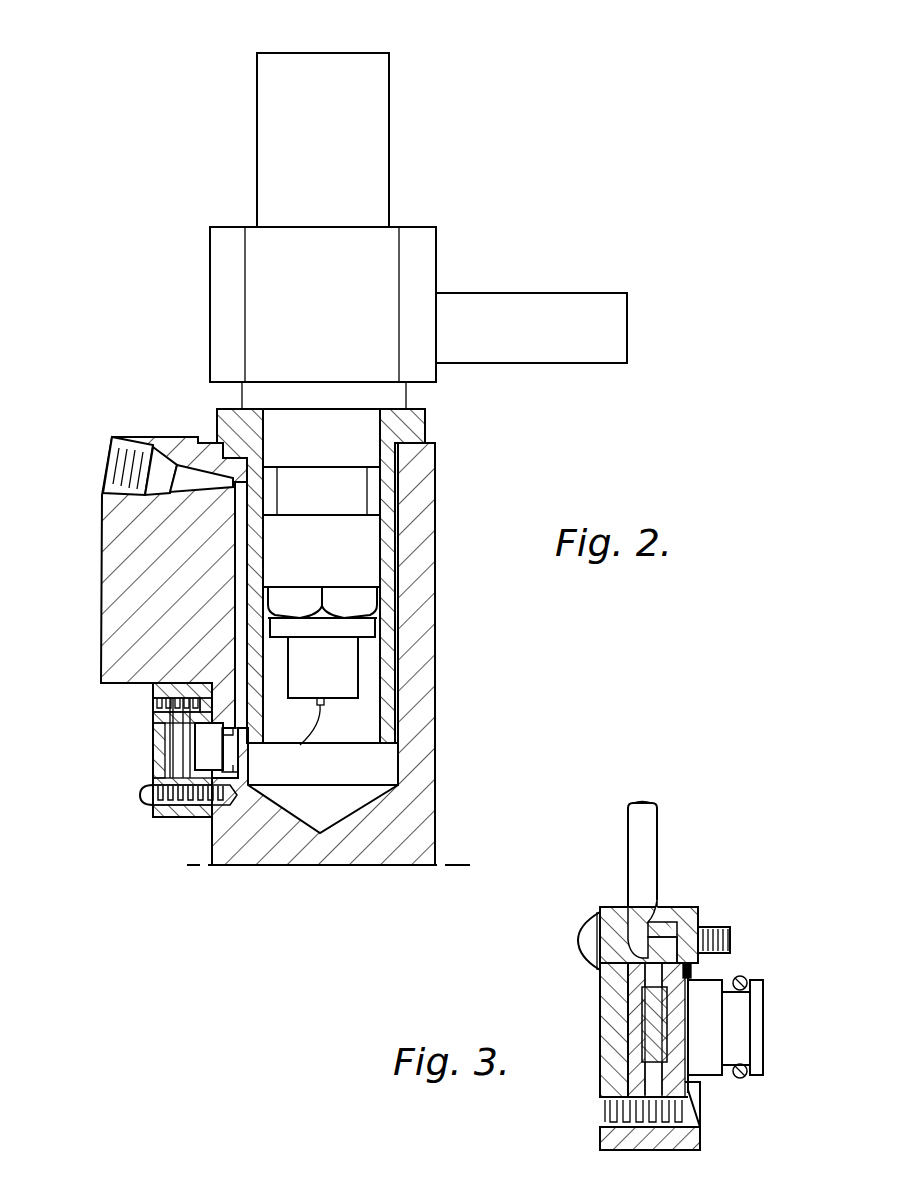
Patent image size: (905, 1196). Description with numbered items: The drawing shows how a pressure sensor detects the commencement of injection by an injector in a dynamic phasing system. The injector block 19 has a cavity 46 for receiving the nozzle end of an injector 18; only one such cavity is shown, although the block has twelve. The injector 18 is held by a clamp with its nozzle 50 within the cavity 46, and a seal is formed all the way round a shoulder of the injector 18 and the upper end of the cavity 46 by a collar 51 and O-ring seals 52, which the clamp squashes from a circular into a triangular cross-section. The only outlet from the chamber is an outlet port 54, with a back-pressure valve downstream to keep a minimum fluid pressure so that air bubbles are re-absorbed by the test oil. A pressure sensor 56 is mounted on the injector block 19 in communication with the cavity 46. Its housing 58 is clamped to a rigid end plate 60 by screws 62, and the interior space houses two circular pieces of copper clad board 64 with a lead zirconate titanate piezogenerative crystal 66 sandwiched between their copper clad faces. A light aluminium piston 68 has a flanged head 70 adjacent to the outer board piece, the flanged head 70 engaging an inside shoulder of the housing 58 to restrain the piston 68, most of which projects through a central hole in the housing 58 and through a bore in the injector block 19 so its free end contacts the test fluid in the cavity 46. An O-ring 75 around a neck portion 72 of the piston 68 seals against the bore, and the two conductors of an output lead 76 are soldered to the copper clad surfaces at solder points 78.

In FIG. 2, the injector 18 is at (360, 494).
In FIG. 2, the injector block 19 is at (143, 623).
In FIG. 2, the cavity 46 is at (360, 718).
In FIG. 2, the nozzle 50 is at (304, 738).
In FIG. 2, the collar 51 is at (427, 420).
In FIG. 2, the O-ring seals 52 is at (253, 413).
In FIG. 2, the outlet port 54 is at (104, 446).
In FIG. 2, the pressure sensor 56 is at (178, 751).
In FIG. 3, the housing 58 is at (688, 907).
In FIG. 3, the end plate 60 is at (613, 1002).
In FIG. 3, the screws 62 is at (690, 1117).
In FIG. 3, the copper clad board 64 is at (675, 1057).
In FIG. 3, the piezogenerative crystal 66 is at (650, 1037).
In FIG. 3, the piston 68 is at (713, 1030).
In FIG. 3, the flanged head 70 is at (700, 977).
In FIG. 3, the neck portion 72 is at (737, 1077).
In FIG. 3, the O-ring 75 is at (742, 1078).
In FIG. 3, the output lead 76 is at (637, 833).
In FIG. 3, the solder points 78 is at (648, 918).